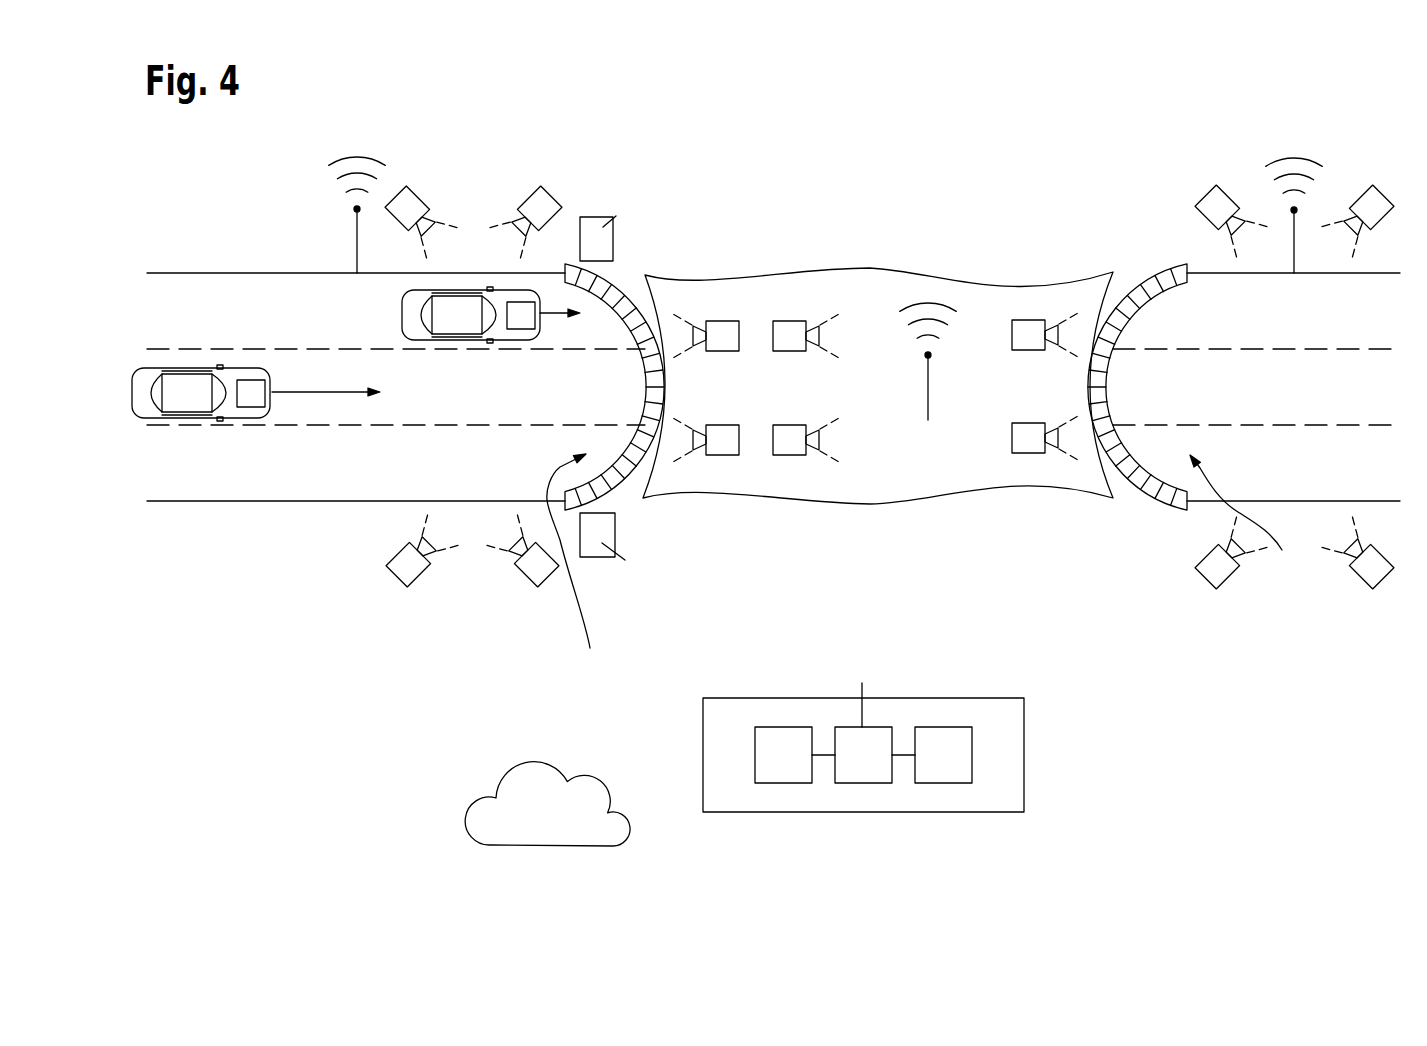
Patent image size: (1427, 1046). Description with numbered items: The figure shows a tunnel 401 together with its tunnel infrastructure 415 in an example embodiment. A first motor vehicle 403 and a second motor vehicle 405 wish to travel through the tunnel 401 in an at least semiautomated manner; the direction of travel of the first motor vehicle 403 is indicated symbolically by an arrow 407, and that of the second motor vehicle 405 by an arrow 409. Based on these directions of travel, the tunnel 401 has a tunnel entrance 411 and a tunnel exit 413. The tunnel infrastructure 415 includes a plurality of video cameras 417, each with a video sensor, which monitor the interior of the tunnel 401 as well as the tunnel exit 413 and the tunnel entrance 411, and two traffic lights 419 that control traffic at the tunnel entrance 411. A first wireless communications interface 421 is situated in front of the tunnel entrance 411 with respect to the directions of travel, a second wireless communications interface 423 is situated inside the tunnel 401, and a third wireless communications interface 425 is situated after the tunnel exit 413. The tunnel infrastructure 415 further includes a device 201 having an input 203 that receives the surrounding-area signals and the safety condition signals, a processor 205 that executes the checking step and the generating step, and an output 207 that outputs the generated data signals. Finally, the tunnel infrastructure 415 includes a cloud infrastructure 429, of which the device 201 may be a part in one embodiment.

The device 201 is at (1024, 755).
The input 203 is at (785, 783).
The processor 205 is at (865, 783).
The output 207 is at (947, 783).
The tunnel 401 is at (884, 574).
The first motor vehicle 403 is at (205, 419).
The second motor vehicle 405 is at (485, 290).
The arrow 407 is at (300, 394).
The arrow 409 is at (542, 326).
The tunnel entrance 411 is at (582, 569).
The tunnel exit 413 is at (1251, 519).
The tunnel infrastructure 415 is at (884, 203).
The video camera 417 is at (399, 196).
The traffic light 419 is at (600, 217).
The first wireless communications interface 421 is at (354, 246).
The second wireless communications interface 423 is at (928, 405).
The communication interface / antenna 425 is at (1291, 228).
The cloud infrastructure 429 is at (471, 834).